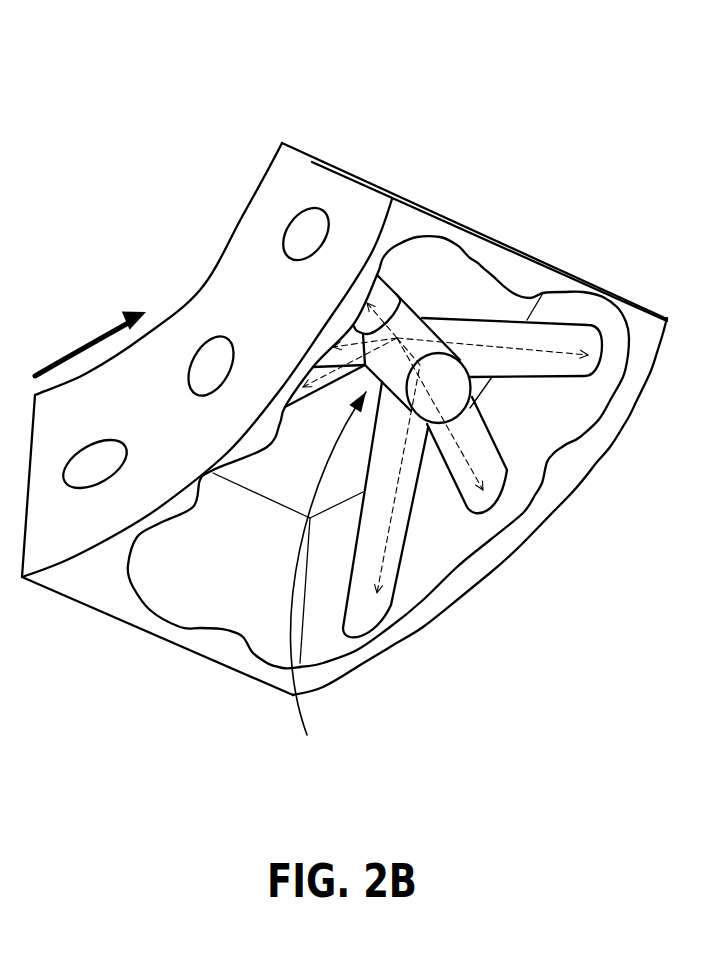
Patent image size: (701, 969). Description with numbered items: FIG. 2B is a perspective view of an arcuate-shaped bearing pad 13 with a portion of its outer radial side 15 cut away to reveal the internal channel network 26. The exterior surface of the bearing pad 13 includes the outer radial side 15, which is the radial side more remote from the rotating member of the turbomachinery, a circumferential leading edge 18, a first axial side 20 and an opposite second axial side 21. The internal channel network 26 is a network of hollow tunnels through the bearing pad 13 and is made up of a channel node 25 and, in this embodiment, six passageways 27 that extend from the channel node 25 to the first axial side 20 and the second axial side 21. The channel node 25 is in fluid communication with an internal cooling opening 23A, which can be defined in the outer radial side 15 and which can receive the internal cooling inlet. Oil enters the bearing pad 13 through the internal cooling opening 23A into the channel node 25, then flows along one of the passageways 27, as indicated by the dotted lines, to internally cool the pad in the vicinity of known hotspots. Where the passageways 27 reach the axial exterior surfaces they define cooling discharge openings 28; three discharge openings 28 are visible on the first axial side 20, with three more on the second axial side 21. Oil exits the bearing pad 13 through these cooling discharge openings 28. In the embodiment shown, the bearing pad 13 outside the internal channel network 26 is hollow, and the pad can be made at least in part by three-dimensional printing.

The bearing pad 13 is at (505, 188).
The outer radial side 15 is at (88, 592).
The circumferential leading edge 18 is at (227, 582).
The first axial side 20 is at (273, 190).
The second axial side 21 is at (533, 433).
The internal cooling opening 23A is at (452, 428).
The channel node 25 is at (437, 350).
The internal channel network 26 is at (295, 520).
The passageways 27 is at (387, 305).
The cooling discharge openings 28 is at (93, 467).